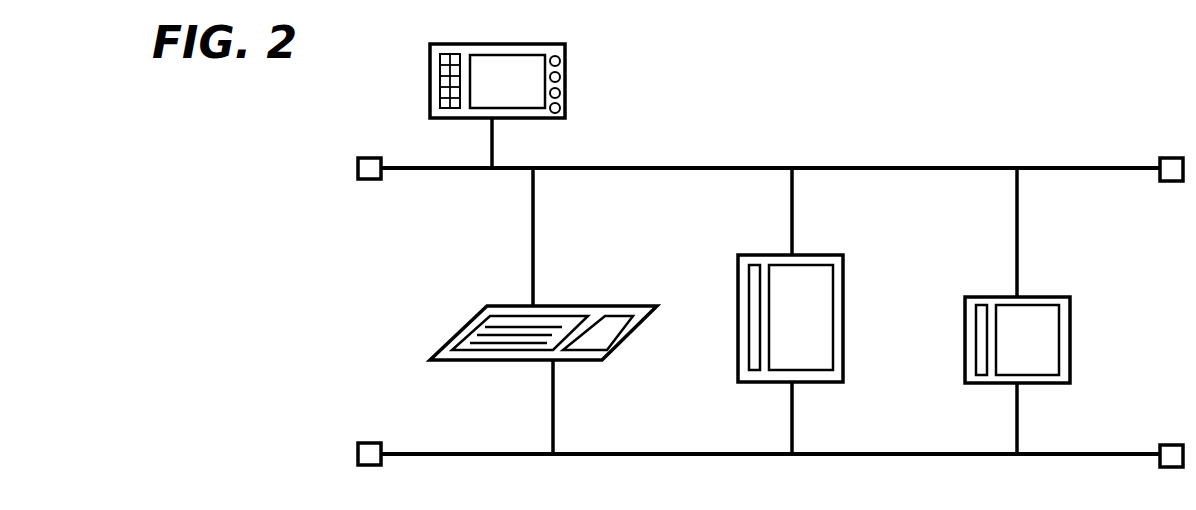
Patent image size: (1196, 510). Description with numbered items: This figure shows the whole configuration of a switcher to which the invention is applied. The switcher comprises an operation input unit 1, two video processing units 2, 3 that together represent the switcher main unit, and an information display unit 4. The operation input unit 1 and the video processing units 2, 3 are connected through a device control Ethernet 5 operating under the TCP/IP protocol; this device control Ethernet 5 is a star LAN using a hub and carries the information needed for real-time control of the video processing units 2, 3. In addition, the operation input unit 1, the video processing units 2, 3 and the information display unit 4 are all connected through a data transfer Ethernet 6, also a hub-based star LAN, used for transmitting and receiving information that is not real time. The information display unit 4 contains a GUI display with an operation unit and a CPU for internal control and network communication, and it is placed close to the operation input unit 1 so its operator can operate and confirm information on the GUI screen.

The operation input unit 1 is at (442, 362).
The video processing unit 2 is at (738, 343).
The video processing unit 3 is at (965, 330).
The information display unit 4 is at (565, 78).
The device control Ethernet 5 is at (1108, 454).
The data transfer Ethernet 6 is at (1112, 168).